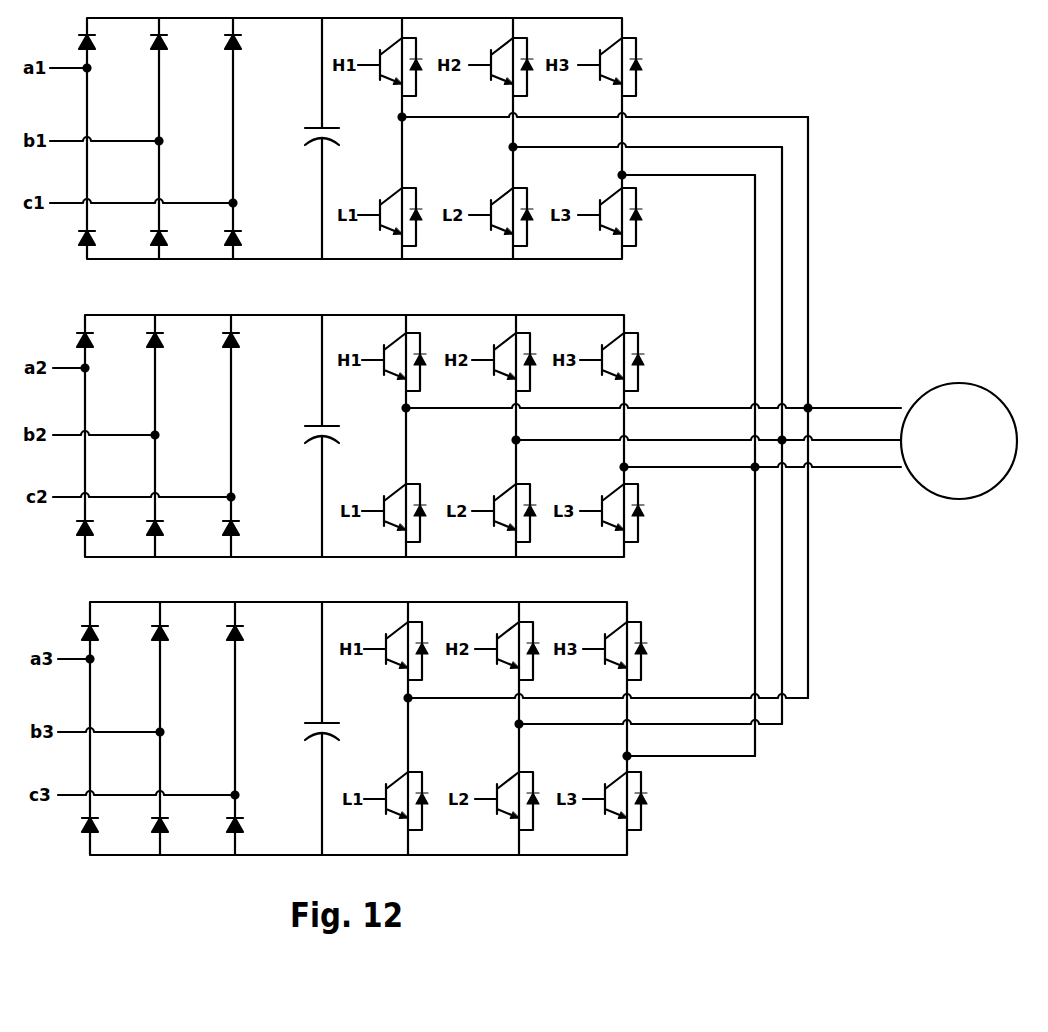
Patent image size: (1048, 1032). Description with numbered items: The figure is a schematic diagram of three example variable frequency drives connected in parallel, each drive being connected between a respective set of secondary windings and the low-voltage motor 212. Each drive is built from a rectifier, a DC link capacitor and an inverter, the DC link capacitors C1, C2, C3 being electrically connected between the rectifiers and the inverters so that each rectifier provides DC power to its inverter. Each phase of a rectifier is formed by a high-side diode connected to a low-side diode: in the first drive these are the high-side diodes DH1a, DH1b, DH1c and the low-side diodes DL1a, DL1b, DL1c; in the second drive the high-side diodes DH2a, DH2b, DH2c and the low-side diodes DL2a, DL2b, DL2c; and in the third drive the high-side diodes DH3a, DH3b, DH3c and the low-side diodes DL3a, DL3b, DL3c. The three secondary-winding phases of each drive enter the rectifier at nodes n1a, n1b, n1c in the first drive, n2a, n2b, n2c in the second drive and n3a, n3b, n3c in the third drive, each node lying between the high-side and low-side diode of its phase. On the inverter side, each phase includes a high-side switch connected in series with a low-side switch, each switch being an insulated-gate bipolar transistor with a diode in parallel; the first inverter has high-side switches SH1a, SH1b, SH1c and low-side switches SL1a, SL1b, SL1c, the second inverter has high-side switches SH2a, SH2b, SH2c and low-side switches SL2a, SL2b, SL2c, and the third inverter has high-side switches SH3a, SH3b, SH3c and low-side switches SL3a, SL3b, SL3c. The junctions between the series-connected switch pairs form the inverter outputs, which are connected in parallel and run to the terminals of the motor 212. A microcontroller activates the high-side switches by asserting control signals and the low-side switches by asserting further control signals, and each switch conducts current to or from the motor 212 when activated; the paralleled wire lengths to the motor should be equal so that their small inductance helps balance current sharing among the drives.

The low-voltage motor 212 is at (959, 441).
The DC link capacitor C1 is at (309, 138).
The DC link capacitor C2 is at (310, 436).
The DC link capacitor C3 is at (309, 728).
The high-side diode DH1a is at (109, 42).
The high-side diode DH1b is at (181, 42).
The high-side diode DH1c is at (254, 42).
The low-side diode DL1a is at (108, 238).
The low-side diode DL1b is at (180, 238).
The low-side diode DL1c is at (253, 238).
The high-side diode DH2a is at (107, 340).
The high-side diode DH2b is at (177, 340).
The high-side diode DH2c is at (252, 340).
The low-side diode DL2a is at (106, 528).
The low-side diode DL2b is at (176, 528).
The low-side diode DL2c is at (251, 528).
The high-side diode DH3a is at (111, 633).
The high-side diode DH3b is at (182, 633).
The high-side diode DH3c is at (256, 633).
The low-side diode DL3a is at (110, 825).
The low-side diode DL3b is at (181, 825).
The low-side diode DL3c is at (255, 825).
The rectifier input node n1a is at (89, 68).
The rectifier input node n1b is at (123, 141).
The rectifier input node n1c is at (160, 203).
The rectifier input node n2a is at (89, 368).
The rectifier input node n2b is at (123, 435).
The rectifier input node n2c is at (160, 497).
The rectifier input node n3a is at (93, 659).
The rectifier input node n3b is at (130, 732).
The rectifier input node n3c is at (165, 795).
The high-side switch SH1a is at (390, 63).
The high-side switch SH1b is at (501, 63).
The high-side switch SH1c is at (608, 63).
The low-side switch SL1a is at (389, 211).
The low-side switch SL1b is at (500, 211).
The low-side switch SL1c is at (606, 211).
The high-side switch SH2a is at (391, 358).
The high-side switch SH2b is at (500, 358).
The high-side switch SH2c is at (607, 358).
The low-side switch SL2a is at (393, 506).
The low-side switch SL2b is at (502, 506).
The low-side switch SL2c is at (609, 506).
The high-side switch SH3a is at (395, 645).
The high-side switch SH3b is at (505, 645).
The high-side switch SH3c is at (612, 645).
The low-side switch SL3a is at (392, 791).
The low-side switch SL3b is at (502, 791).
The low-side switch SL3c is at (609, 791).